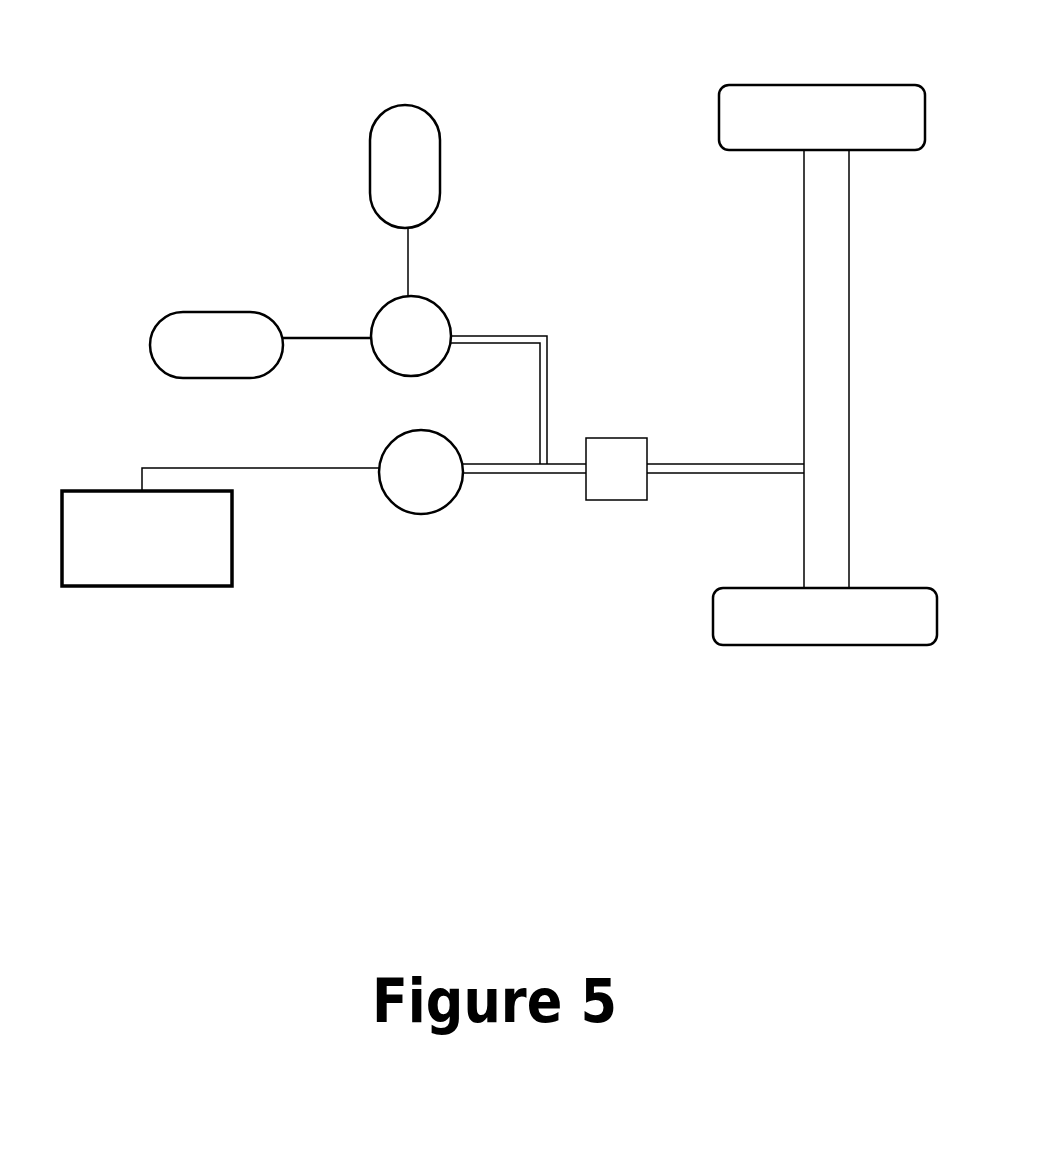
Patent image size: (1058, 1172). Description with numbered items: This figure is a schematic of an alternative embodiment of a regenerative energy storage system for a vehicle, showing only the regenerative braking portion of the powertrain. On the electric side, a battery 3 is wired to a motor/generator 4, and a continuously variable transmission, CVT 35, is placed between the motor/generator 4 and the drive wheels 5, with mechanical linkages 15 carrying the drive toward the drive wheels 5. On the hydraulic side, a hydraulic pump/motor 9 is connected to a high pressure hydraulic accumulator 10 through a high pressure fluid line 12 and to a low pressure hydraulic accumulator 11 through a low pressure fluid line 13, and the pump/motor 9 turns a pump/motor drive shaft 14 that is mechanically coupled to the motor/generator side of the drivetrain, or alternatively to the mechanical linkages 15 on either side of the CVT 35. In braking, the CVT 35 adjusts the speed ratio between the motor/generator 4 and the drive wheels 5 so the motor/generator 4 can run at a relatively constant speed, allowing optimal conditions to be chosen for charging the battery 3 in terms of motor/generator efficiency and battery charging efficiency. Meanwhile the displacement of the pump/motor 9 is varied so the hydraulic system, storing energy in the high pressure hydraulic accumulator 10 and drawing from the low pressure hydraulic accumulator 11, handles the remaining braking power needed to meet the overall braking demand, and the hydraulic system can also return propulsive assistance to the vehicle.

The battery 3 is at (153, 550).
The motor/generator 4 is at (422, 490).
The drive wheels 5 is at (792, 85).
The hydraulic pump/motor 9 is at (422, 312).
The high pressure hydraulic accumulator 10 is at (393, 128).
The low pressure hydraulic accumulator 11 is at (218, 361).
The high pressure fluid line 12 is at (408, 252).
The low pressure fluid line 13 is at (321, 345).
The pump/motor drive shaft 14 is at (484, 338).
The mechanical linkages 15 is at (718, 468).
The continuously variable transmission (CVT) 35 is at (617, 458).